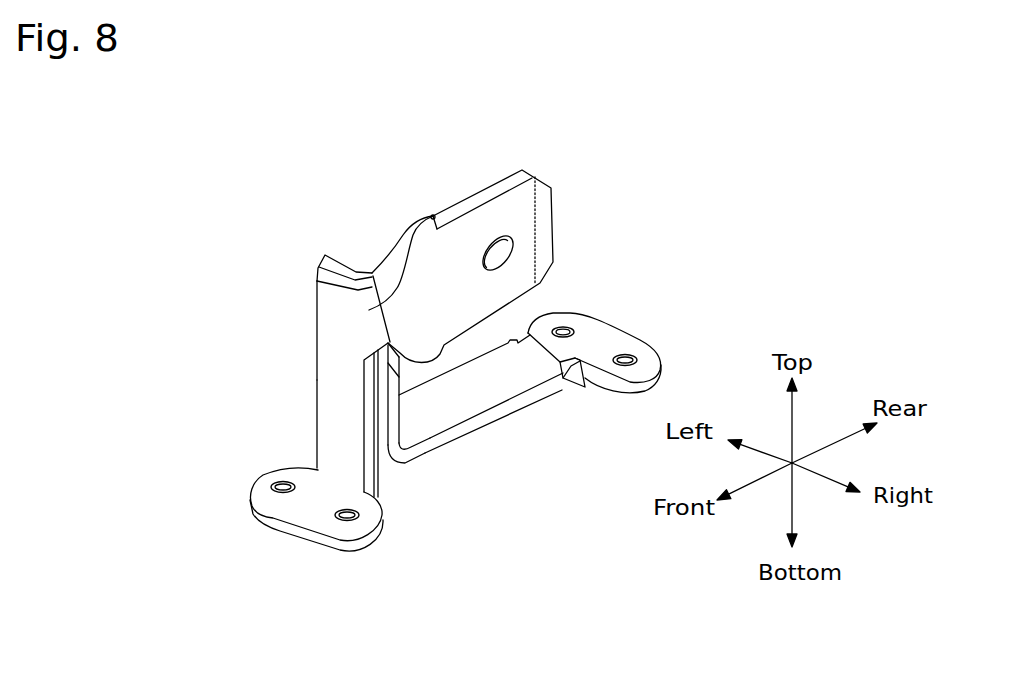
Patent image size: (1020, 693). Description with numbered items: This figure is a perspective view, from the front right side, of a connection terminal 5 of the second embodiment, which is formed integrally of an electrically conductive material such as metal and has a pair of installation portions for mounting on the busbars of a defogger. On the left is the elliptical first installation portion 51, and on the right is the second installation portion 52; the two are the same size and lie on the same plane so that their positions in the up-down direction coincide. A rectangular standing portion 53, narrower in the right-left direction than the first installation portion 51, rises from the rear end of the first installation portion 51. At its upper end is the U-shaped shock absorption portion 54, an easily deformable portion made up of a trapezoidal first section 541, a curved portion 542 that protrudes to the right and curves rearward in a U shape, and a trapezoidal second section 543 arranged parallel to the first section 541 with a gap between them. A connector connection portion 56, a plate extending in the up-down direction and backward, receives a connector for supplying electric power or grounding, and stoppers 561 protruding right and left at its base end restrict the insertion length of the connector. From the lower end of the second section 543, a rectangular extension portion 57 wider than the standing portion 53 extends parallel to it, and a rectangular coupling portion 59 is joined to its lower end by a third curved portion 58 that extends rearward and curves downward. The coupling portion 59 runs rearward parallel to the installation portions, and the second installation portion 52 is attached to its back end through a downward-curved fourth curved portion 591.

The connection terminal 5 is at (230, 142).
The first installation portion 51 is at (317, 507).
The second installation portion 52 is at (597, 333).
The standing portion 53 is at (330, 437).
The shock absorption portion 54 is at (276, 261).
The first section 541 is at (337, 319).
The curved portion 542 is at (408, 272).
The second section 543 is at (343, 257).
The connector connection portion 56 is at (500, 193).
The stopper 561 is at (419, 216).
The extension portion 57 is at (390, 413).
The third curved portion 58 is at (400, 458).
The coupling portion 59 is at (477, 420).
The fourth curved portion 591 is at (575, 370).